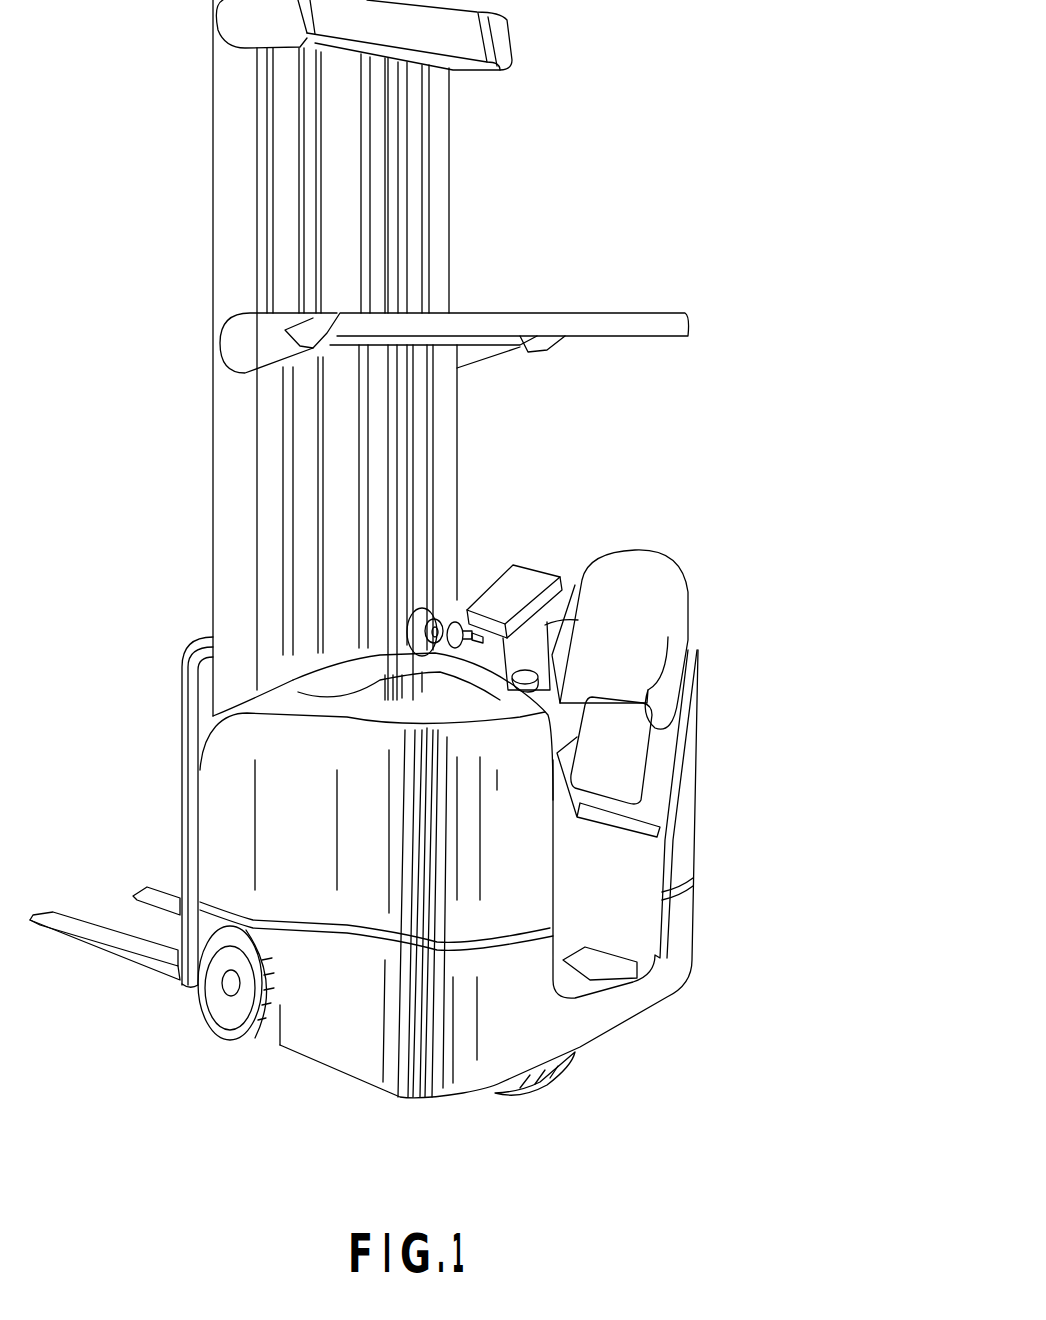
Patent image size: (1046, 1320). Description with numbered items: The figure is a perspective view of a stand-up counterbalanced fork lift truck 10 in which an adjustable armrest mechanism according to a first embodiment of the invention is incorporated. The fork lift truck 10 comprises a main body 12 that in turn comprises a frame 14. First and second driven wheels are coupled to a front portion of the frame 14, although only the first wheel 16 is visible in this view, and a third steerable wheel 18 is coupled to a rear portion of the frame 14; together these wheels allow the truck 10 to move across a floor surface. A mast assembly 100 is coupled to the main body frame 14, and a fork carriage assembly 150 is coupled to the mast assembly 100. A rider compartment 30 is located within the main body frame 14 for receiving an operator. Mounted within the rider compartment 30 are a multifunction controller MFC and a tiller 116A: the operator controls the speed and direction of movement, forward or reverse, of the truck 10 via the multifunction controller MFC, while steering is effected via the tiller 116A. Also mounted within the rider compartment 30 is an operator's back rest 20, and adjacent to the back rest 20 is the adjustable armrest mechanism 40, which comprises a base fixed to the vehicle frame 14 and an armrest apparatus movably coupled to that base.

The fork lift truck 10 is at (458, 585).
The mast assembly 100 is at (451, 358).
The fork carriage assembly 150 is at (110, 886).
The main body 12 is at (380, 893).
The frame 14 is at (328, 895).
The first wheel 16 is at (227, 1013).
The third steerable wheel 18 is at (553, 1080).
The multifunction controller MFC is at (447, 609).
The armrest mechanism 40 is at (553, 563).
The tiller 116A is at (530, 695).
The rider compartment 30 is at (661, 640).
The back rest 20 is at (661, 639).